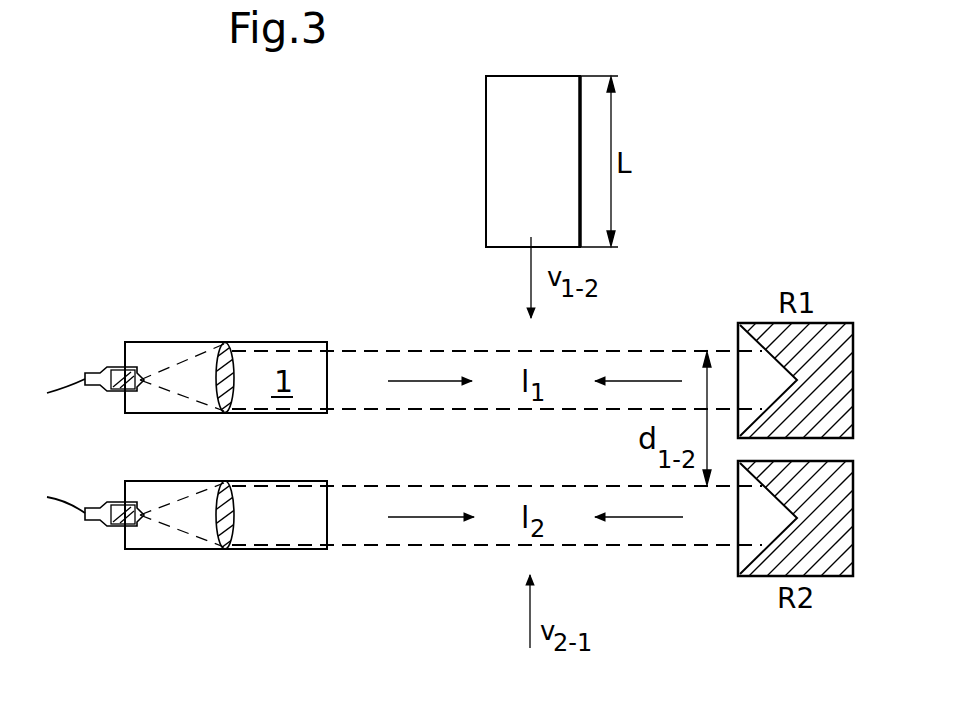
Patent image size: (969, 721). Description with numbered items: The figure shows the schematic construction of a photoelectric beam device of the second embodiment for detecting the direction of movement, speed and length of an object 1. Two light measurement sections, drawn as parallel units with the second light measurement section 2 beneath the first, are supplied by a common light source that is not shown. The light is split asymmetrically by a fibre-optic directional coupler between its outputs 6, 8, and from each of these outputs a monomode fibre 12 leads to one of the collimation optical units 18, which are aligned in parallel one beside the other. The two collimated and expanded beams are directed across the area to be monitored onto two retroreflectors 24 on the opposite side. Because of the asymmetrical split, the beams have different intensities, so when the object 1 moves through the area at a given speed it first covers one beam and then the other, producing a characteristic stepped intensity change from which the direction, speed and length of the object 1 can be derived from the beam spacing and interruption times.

The object 1 is at (503, 103).
The second light barrier 2 is at (293, 533).
The output of the asymmetrical directional coupler 6 is at (83, 380).
The output of the asymmetrical directional coupler 8 is at (84, 509).
The monomode fibre 12 is at (65, 392).
The collimation optical unit 18 is at (212, 342).
The retroreflector 24 is at (860, 398).